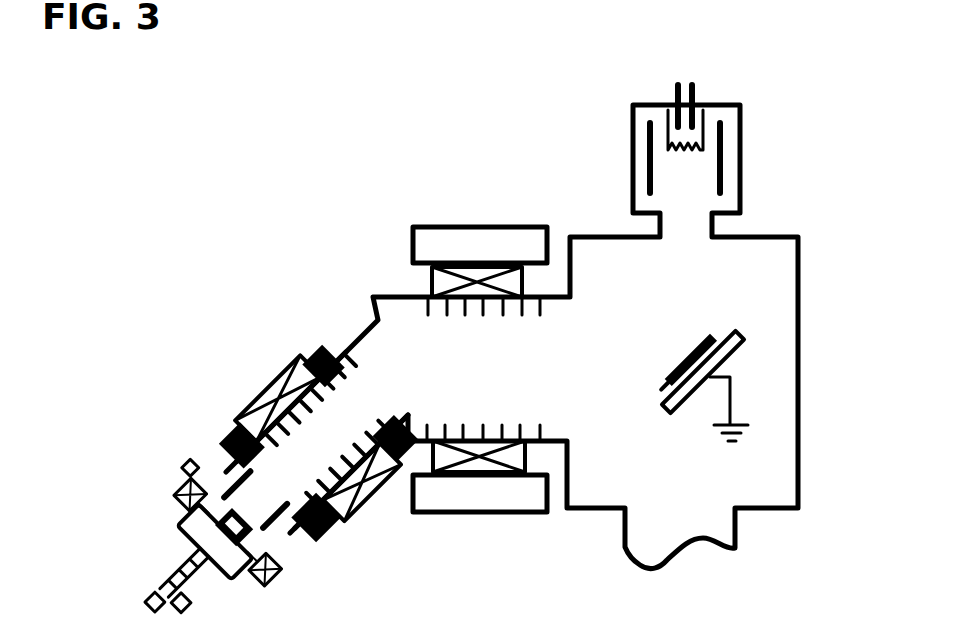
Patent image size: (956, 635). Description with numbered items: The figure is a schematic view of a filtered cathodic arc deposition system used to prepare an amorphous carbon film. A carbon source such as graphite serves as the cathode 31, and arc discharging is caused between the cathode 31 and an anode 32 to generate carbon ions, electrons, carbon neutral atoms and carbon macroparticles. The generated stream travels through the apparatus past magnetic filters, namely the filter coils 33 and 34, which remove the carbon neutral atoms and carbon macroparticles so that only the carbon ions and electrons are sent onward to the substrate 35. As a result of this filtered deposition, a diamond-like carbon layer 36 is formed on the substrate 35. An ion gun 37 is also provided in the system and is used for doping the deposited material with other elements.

The cathode 31 is at (247, 527).
The anode 32 is at (225, 473).
The filter coil 33 is at (285, 372).
The filter coil 34 is at (432, 288).
The substrate 35 is at (713, 332).
The DLC layer 36 is at (677, 368).
The ion gun 37 is at (638, 178).